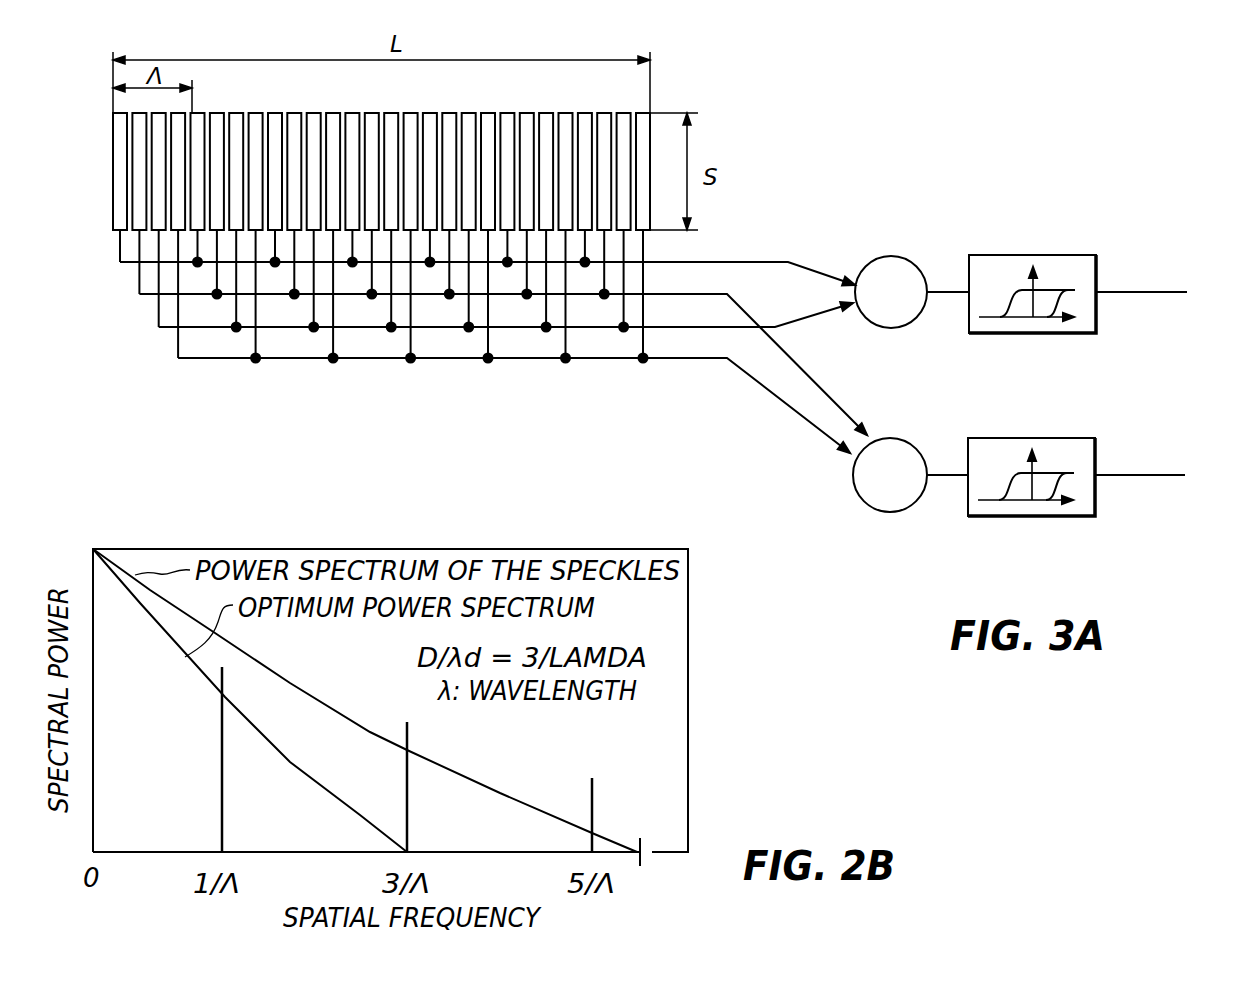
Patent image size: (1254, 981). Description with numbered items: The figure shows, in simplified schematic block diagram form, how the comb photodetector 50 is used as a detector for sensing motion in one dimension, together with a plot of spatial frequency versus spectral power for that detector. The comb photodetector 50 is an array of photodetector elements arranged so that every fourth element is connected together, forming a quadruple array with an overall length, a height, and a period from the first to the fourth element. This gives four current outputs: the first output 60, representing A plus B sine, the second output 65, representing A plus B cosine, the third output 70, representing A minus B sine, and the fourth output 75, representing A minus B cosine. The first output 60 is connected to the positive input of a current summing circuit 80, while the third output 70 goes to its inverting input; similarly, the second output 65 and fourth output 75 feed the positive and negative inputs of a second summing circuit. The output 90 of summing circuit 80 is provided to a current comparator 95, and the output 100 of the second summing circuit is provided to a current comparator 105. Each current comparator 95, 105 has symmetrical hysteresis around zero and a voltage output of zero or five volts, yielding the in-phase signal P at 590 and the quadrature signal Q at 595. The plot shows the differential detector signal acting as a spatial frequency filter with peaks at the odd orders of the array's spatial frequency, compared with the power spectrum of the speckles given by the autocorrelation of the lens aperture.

The comb photodetector 50 is at (650, 130).
The first output 60 is at (804, 266).
The second output 65 is at (775, 352).
The third output 70 is at (800, 319).
The fourth output 75 is at (785, 408).
The current summing circuit 80 is at (888, 256).
The output of summing circuit 90 is at (940, 291).
The current comparator 95 is at (1080, 334).
The output of summing circuit 100 is at (940, 477).
The current comparator 105 is at (1075, 515).
The output signal P 590 is at (1158, 294).
The output signal Q 595 is at (1160, 477).